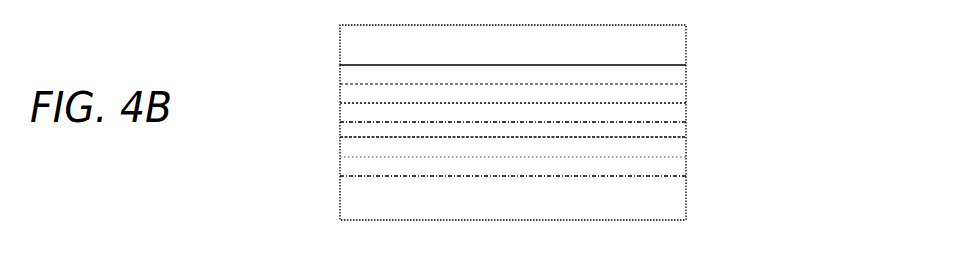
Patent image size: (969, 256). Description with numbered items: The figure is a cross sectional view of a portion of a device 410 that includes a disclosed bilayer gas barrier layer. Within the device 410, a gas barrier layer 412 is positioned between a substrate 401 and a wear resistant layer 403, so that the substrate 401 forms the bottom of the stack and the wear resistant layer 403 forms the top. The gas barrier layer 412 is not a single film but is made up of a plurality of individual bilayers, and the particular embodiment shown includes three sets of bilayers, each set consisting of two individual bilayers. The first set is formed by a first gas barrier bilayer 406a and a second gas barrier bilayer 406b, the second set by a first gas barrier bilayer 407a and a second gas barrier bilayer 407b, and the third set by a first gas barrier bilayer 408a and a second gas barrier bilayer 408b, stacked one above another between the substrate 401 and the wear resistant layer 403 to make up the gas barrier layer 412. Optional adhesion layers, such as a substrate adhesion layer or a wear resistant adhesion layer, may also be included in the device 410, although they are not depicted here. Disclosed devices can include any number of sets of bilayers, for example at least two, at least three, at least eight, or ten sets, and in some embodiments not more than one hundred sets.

The substrate 401 is at (464, 212).
The wear resistant layer 403 is at (473, 54).
The first gas barrier bilayer 406a is at (672, 95).
The second gas barrier bilayer 406b is at (672, 75).
The first gas barrier bilayer 407a is at (672, 131).
The second gas barrier bilayer 407b is at (672, 115).
The first gas barrier bilayer 408a is at (672, 166).
The second gas barrier bilayer 408b is at (672, 147).
The device 410 is at (234, 86).
The gas barrier layer 412 is at (325, 66).